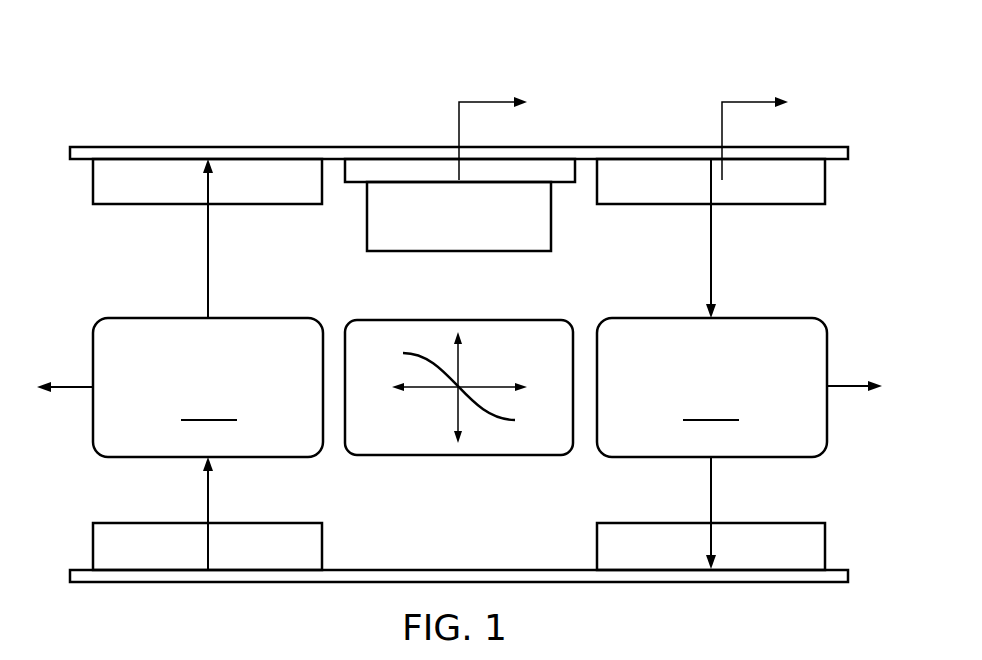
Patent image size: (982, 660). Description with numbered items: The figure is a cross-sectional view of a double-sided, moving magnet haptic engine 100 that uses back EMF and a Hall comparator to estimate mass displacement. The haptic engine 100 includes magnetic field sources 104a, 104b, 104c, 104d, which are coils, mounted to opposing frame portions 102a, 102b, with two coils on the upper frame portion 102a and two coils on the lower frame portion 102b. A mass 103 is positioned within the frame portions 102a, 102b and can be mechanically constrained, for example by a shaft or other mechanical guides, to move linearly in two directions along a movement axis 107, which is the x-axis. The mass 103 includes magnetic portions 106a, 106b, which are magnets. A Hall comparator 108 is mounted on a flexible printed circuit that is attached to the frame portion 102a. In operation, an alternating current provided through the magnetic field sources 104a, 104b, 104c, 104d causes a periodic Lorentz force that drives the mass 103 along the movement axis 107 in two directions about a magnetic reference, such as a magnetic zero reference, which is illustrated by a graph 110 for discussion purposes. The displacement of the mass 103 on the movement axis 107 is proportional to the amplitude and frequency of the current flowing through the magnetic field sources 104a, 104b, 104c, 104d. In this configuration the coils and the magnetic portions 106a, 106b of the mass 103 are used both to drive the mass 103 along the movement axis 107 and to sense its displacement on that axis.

The haptic engine 100 is at (268, 75).
The frame portion 102a is at (392, 147).
The frame portion 102b is at (345, 583).
The mass 103 is at (72, 315).
The magnetic field source 104a is at (93, 182).
The magnetic field source 104b is at (825, 180).
The magnetic field source 104c is at (93, 547).
The magnetic field source 104d is at (825, 547).
The magnetic portion 106a is at (208, 364).
The magnetic portion 106b is at (712, 364).
The movement axis 107 is at (70, 392).
The Hall comparator 108 is at (437, 251).
The graph 110 is at (425, 437).